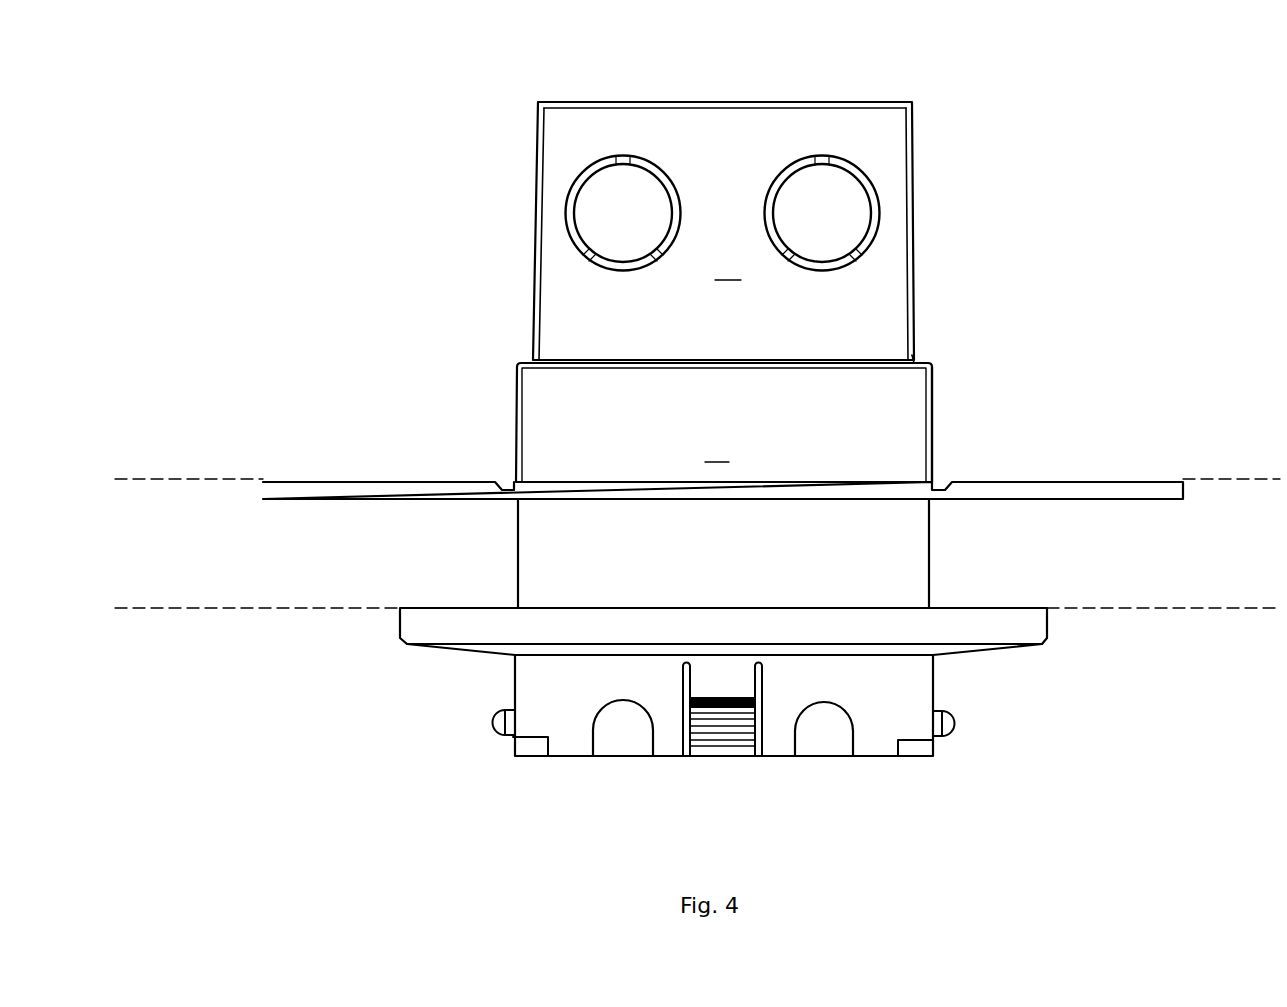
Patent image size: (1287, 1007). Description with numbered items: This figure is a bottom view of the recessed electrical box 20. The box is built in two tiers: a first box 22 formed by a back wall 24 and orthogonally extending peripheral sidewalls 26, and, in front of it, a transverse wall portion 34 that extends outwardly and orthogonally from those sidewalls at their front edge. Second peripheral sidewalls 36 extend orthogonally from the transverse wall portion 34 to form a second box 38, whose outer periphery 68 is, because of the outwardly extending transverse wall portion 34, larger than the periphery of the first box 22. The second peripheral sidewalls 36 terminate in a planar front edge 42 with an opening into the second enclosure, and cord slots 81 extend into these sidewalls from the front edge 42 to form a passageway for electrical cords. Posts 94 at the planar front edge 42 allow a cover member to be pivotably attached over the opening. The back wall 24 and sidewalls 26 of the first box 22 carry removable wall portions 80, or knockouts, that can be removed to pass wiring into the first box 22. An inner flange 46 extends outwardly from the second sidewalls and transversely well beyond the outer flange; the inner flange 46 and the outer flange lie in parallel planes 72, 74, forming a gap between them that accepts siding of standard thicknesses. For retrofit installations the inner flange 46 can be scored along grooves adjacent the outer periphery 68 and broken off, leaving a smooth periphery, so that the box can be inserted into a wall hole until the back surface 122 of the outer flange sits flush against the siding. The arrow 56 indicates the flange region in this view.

The recessed electrical box 20 is at (1020, 348).
The first box 22 is at (723, 231).
The back wall 24 is at (790, 102).
The peripheral sidewalls 26 is at (535, 232).
The transverse wall portion 34 is at (915, 363).
The second peripheral sidewalls 36 is at (932, 425).
The second box 38 is at (724, 422).
The planar front edge 42 is at (873, 758).
The inner flange 46 is at (1155, 497).
The top surface of plate 56 is at (1117, 465).
The outer periphery 68 is at (930, 555).
The parallel plane 72 is at (187, 479).
The parallel plane 74 is at (258, 609).
The removable wall portions 80 is at (640, 238).
The cord slots 81 is at (623, 730).
The posts 94 is at (948, 738).
The back surface 122 is at (456, 595).